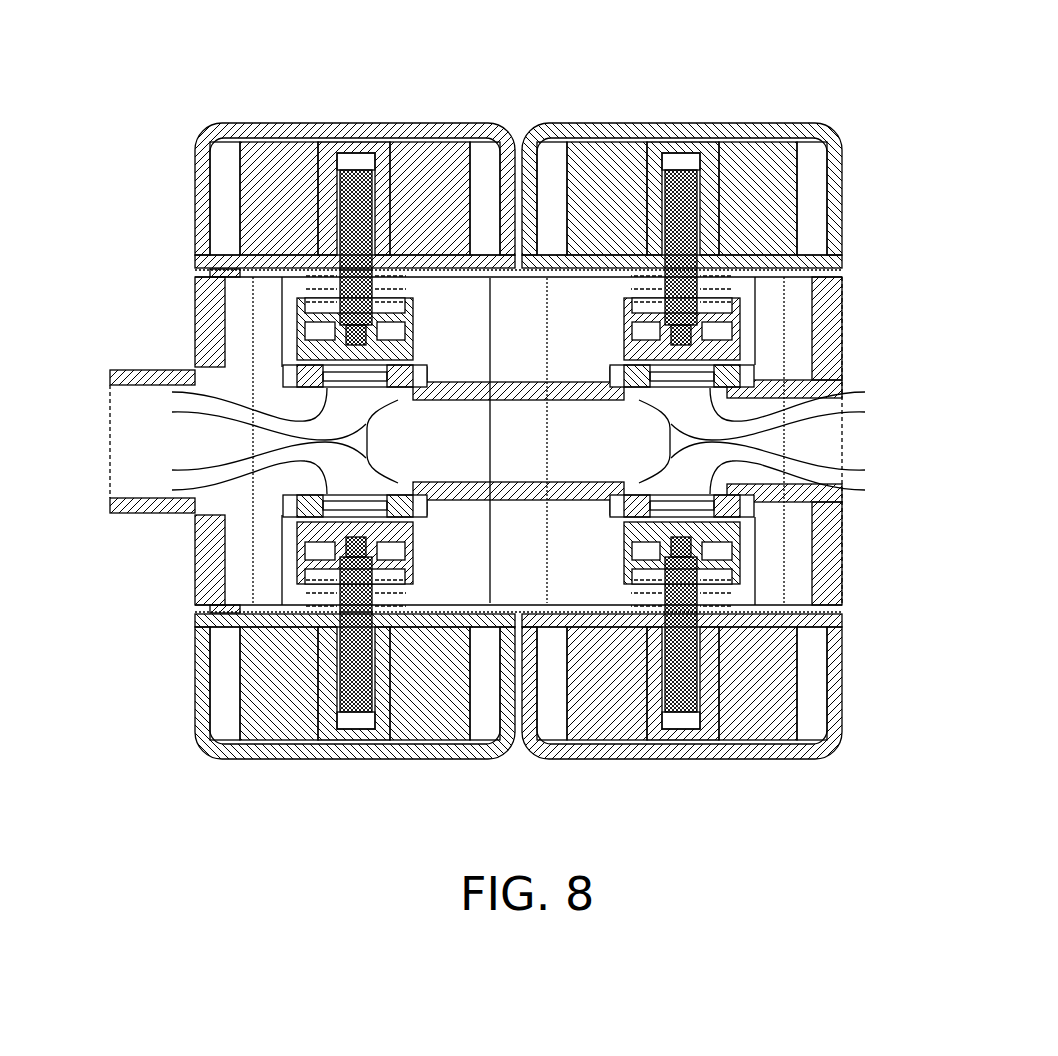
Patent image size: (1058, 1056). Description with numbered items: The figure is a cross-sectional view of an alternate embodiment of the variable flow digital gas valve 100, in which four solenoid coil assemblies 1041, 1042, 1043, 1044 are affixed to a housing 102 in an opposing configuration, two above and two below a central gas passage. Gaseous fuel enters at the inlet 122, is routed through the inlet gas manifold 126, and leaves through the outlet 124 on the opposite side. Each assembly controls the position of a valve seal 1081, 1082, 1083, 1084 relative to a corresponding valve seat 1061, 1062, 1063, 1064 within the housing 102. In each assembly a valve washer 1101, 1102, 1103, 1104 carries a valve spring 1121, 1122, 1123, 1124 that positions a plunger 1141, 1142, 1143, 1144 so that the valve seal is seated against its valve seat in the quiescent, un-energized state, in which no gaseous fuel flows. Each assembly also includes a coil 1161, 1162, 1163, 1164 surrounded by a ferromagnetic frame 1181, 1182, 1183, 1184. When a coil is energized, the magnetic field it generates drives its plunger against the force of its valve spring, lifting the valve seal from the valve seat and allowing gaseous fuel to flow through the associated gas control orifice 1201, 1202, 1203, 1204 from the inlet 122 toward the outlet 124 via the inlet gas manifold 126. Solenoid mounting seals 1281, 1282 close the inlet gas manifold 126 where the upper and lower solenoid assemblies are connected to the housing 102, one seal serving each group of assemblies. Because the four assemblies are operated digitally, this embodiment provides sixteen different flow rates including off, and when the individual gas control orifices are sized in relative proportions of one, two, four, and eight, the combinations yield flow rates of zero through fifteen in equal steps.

The variable flow digital gas valve 100 is at (486, 423).
The housing 102 is at (840, 285).
The solenoid coil assembly 1041 is at (723, 241).
The solenoid coil assembly 1042 is at (723, 644).
The solenoid coil assembly 1043 is at (297, 241).
The solenoid coil assembly 1044 is at (299, 641).
The valve seat 1061 is at (745, 384).
The valve seat 1062 is at (750, 500).
The valve seat 1063 is at (290, 384).
The valve seat 1064 is at (290, 498).
The valve seal 1081 is at (770, 252).
The valve seal 1082 is at (770, 630).
The valve seal 1083 is at (267, 252).
The valve seal 1084 is at (267, 630).
The valve washer 1101 is at (738, 298).
The valve washer 1102 is at (738, 584).
The valve washer 1103 is at (299, 298).
The valve washer 1104 is at (299, 584).
The valve spring 1121 is at (660, 268).
The valve spring 1122 is at (660, 614).
The valve spring 1123 is at (377, 268).
The valve spring 1124 is at (377, 614).
The plunger 1141 is at (682, 167).
The plunger 1142 is at (682, 715).
The plunger 1143 is at (355, 167).
The plunger 1144 is at (355, 715).
The coil 1161 is at (795, 212).
The coil 1162 is at (795, 670).
The coil 1163 is at (242, 212).
The coil 1164 is at (242, 670).
The ferromagnetic frame 1181 is at (825, 142).
The ferromagnetic frame 1182 is at (825, 740).
The ferromagnetic frame 1183 is at (212, 142).
The ferromagnetic frame 1184 is at (212, 740).
The gas control orifice 1201 is at (815, 405).
The gas control orifice 1202 is at (815, 465).
The gas control orifice 1203 is at (172, 392).
The gas control orifice 1204 is at (172, 490).
The inlet 122 is at (145, 436).
The outlet 124 is at (815, 444).
The inlet gas manifold 126 is at (238, 292).
The solenoid mounting seal 1281 is at (208, 272).
The solenoid mounting seal 1282 is at (208, 609).